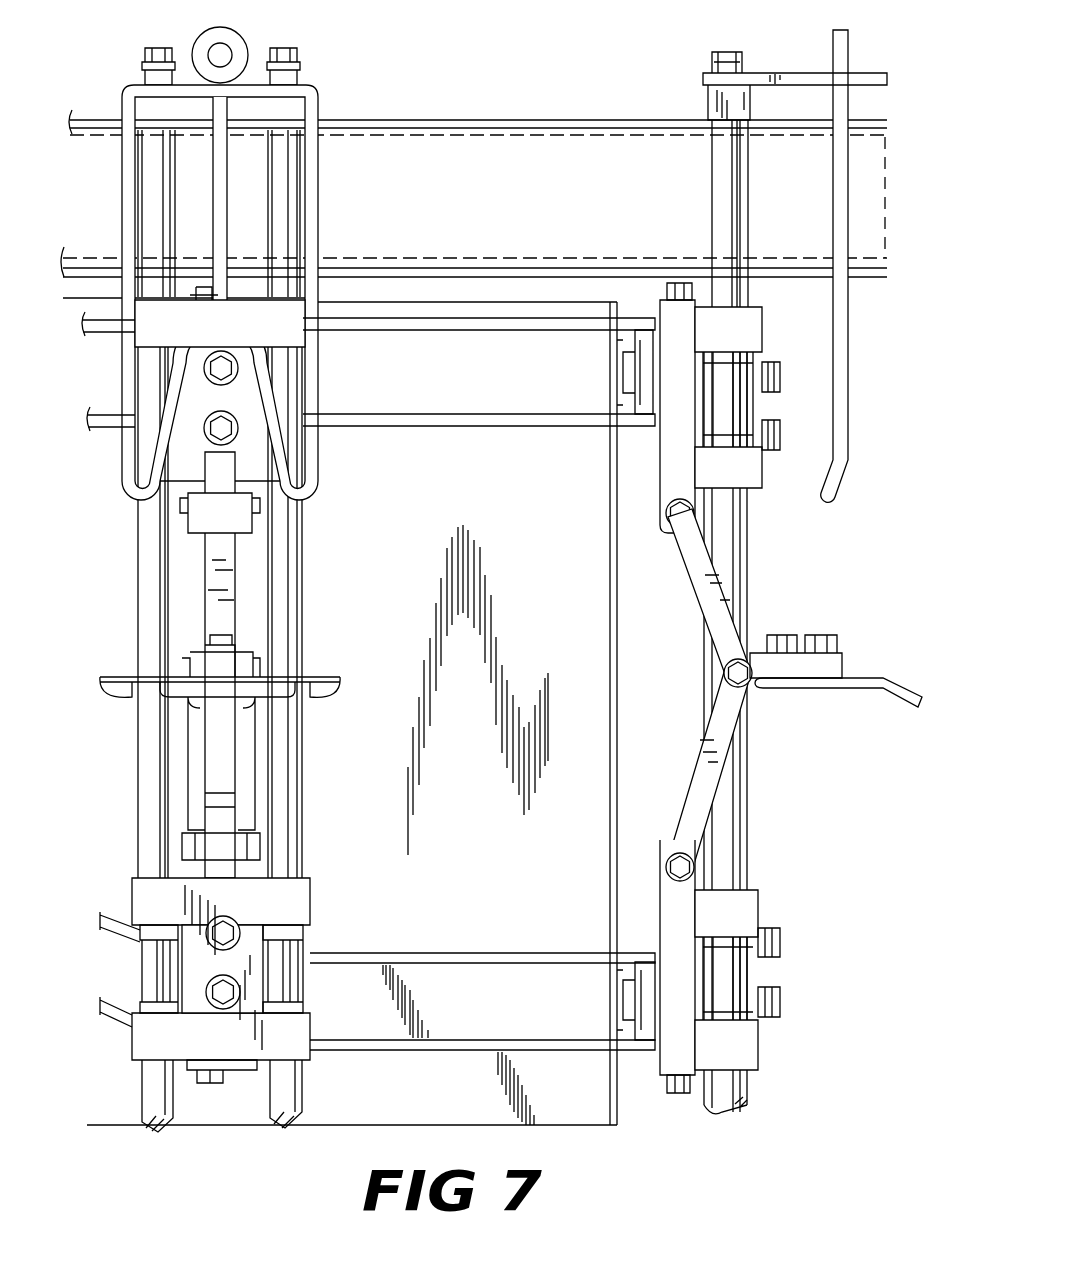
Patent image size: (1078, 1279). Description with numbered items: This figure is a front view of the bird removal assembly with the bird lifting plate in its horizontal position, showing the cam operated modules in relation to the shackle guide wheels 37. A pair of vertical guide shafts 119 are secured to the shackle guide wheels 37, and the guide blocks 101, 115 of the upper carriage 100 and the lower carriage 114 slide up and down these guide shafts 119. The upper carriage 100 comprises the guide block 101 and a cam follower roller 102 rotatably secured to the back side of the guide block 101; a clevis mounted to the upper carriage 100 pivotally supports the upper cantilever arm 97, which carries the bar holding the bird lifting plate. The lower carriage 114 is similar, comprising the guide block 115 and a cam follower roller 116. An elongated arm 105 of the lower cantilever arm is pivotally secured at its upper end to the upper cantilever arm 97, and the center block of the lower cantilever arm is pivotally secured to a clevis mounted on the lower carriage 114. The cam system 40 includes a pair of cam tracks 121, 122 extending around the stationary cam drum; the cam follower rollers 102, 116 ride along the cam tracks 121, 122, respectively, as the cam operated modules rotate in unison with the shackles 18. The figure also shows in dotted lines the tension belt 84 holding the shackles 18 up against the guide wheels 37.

The shackle 18 is at (122, 186).
The shackle guide wheel 37 is at (343, 265).
The cam system 40 is at (470, 433).
The tension belt 84 is at (112, 113).
The upper cantilever arm 97 is at (695, 570).
The upper carriage 100 is at (253, 447).
The guide block 101 is at (152, 320).
The cam follower roller 102 is at (640, 398).
The elongated arm 105 is at (717, 722).
The lower carriage 114 is at (289, 954).
The guide block 115 is at (148, 908).
The cam follower roller 116 is at (640, 964).
The vertical guide shaft 119 is at (157, 612).
The cam track 121 is at (523, 330).
The cam track 122 is at (479, 965).